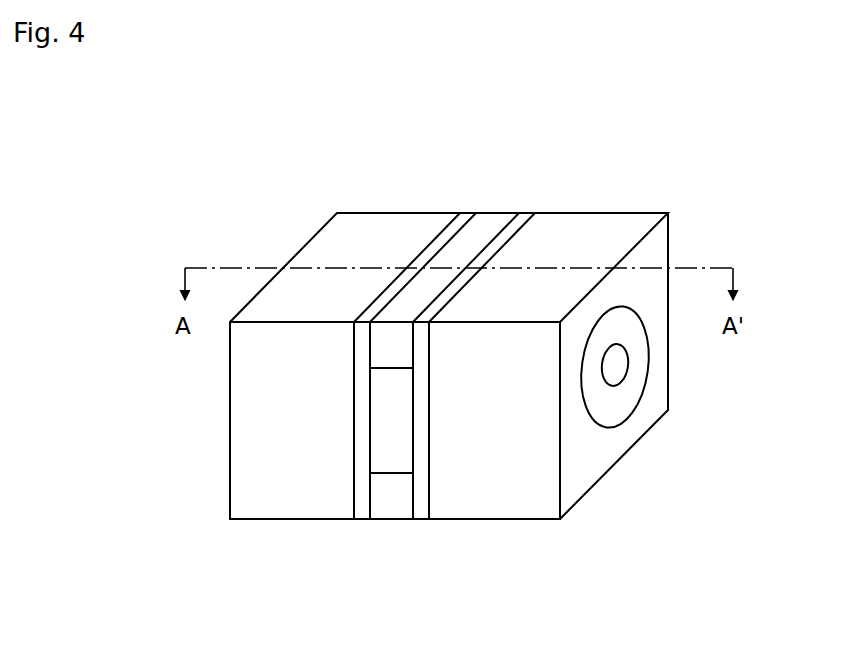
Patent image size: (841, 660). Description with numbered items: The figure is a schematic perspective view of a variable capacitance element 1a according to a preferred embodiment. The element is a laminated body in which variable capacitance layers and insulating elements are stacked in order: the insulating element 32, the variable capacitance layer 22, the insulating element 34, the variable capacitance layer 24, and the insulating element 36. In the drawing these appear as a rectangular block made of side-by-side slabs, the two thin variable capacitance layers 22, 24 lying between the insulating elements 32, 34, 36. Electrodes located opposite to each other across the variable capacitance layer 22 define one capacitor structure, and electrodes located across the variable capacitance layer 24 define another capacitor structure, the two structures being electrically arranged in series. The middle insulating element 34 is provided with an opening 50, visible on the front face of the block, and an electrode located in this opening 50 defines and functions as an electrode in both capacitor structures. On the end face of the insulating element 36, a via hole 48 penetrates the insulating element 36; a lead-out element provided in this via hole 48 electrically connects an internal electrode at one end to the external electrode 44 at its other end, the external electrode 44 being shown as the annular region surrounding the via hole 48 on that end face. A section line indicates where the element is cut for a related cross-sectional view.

The variable capacitance element 1a is at (236, 214).
The insulating element 32 is at (372, 220).
The variable capacitance layer 22 is at (463, 220).
The variable capacitance layer 24 is at (522, 220).
The insulating element 36 is at (622, 220).
The opening 50 is at (386, 457).
The insulating element 34 is at (397, 507).
The external electrode 44 is at (640, 358).
The via hole 48 is at (612, 375).